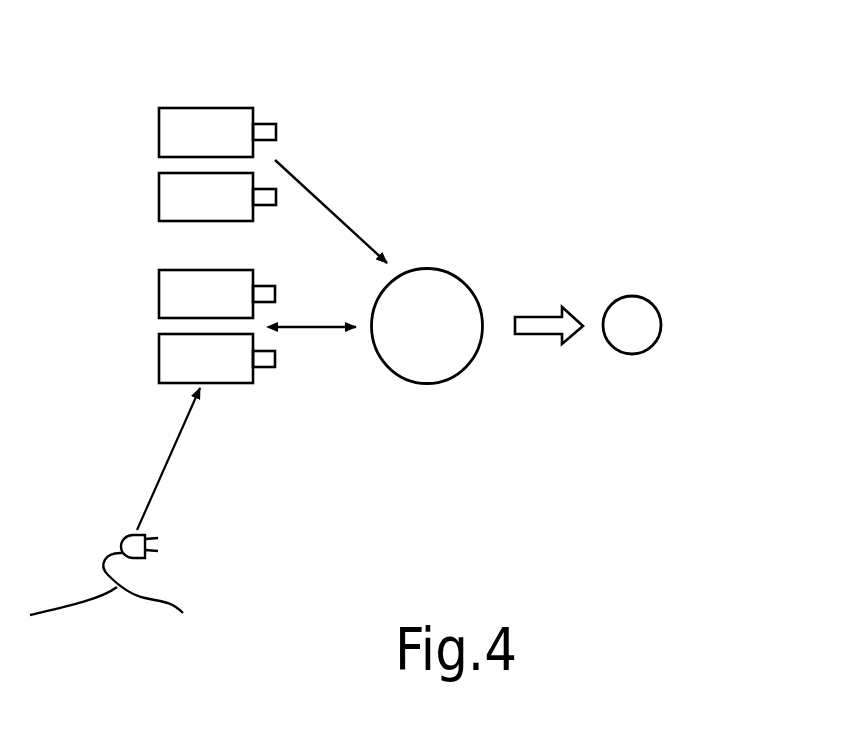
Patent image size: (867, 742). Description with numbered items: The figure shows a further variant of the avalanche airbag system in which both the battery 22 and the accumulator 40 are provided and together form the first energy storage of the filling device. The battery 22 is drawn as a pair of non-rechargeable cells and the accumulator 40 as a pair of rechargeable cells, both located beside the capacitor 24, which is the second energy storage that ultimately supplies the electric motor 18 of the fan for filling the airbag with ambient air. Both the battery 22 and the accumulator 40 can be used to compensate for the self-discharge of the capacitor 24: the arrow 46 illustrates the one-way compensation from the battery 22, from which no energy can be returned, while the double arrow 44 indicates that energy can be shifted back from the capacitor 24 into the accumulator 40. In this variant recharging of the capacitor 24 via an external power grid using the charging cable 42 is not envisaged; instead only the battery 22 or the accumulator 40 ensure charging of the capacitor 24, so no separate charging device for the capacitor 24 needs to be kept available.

The battery 22 is at (158, 102).
The accumulator 40 is at (157, 267).
The arrow 46 is at (322, 200).
The double arrow 44 is at (327, 328).
The capacitor 24 is at (433, 282).
The electric motor 18 is at (630, 310).
The charging cable 42 is at (128, 512).